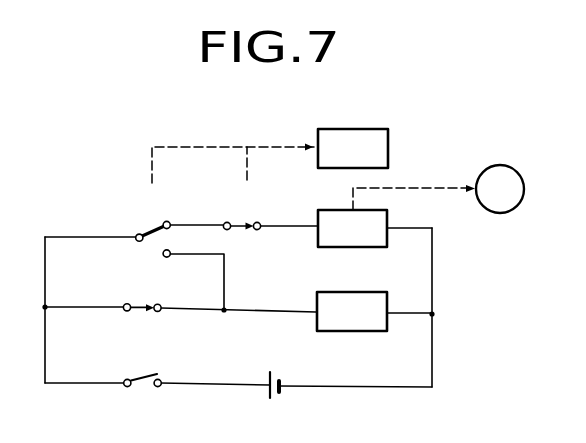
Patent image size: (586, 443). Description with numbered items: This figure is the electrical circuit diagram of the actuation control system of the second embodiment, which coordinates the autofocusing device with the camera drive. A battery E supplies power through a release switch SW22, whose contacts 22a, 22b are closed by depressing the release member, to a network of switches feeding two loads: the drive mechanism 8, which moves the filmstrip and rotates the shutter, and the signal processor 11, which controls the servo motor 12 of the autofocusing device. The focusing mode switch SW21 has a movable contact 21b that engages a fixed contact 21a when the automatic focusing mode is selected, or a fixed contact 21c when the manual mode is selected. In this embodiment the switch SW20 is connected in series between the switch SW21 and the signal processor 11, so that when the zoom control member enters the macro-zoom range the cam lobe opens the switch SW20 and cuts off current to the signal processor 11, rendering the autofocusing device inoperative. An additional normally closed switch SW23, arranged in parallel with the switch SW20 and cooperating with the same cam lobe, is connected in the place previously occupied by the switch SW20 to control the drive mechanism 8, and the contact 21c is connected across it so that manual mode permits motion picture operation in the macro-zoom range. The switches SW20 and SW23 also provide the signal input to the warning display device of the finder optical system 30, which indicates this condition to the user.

The finder optical system 30 is at (353, 148).
The signal processor 11 is at (352, 228).
The drive mechanism 8 is at (352, 311).
The servo motor 12 is at (517, 170).
The fixed contact 21a is at (172, 223).
The movable contact 21b is at (135, 232).
The fixed contact 21c is at (168, 258).
The switch contact a of SW22 22a is at (130, 378).
The switch contact b of SW22 22b is at (163, 379).
The focusing mode switch SW21 is at (152, 214).
The zoom range switch SW20 is at (242, 211).
The normally closed switch SW23 is at (144, 325).
The release switch SW22 is at (145, 397).
The battery E is at (276, 371).